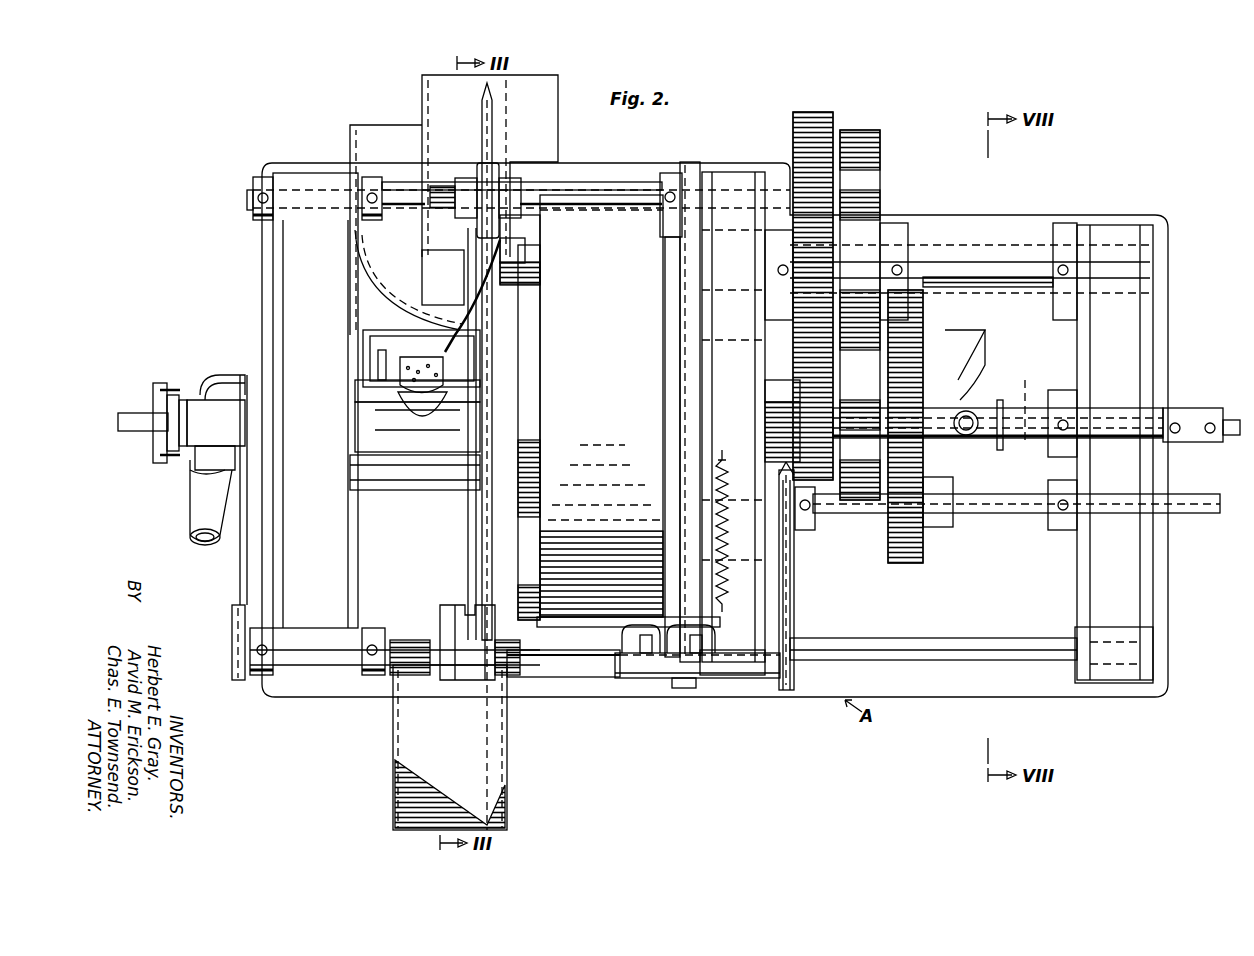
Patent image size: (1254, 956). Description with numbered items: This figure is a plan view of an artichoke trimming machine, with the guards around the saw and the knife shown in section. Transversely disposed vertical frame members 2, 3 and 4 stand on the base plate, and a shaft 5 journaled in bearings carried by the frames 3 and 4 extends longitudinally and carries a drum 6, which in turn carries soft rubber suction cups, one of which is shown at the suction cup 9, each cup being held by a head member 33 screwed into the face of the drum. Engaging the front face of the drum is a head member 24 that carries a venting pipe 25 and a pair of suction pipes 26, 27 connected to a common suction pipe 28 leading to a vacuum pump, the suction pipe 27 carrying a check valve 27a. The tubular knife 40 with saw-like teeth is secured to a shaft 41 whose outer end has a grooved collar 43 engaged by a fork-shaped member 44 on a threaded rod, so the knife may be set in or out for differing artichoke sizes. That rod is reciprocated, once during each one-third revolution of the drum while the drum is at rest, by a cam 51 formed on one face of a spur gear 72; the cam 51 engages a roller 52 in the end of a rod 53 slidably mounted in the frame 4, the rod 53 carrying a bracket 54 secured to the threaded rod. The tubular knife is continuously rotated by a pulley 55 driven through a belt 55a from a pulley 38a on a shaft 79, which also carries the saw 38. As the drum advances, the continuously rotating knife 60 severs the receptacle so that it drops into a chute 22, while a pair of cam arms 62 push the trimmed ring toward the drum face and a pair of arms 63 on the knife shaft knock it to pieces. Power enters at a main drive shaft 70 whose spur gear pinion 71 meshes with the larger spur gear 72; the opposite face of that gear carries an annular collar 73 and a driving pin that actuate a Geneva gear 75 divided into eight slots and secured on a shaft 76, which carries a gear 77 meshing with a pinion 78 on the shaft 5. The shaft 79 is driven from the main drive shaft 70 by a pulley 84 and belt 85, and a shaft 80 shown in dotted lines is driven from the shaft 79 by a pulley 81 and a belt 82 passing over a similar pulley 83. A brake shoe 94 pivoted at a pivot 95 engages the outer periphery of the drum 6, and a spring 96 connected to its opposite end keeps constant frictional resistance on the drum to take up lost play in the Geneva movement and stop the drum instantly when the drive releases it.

The frame member 2 is at (316, 424).
The frame member 3 is at (746, 423).
The frame member 4 is at (1100, 453).
The shaft 5 is at (945, 412).
The drum 6 is at (601, 406).
The suction cup 9 is at (505, 268).
The chute 22 is at (393, 125).
The head member 24 is at (532, 341).
The venting pipe 25 is at (480, 330).
The suction pipe 26 is at (432, 485).
The suction pipe 27 is at (385, 362).
The check valve 27a is at (440, 357).
The common suction pipe 28 is at (193, 515).
The head member 33 is at (525, 236).
The saw 38 is at (470, 578).
The pulley 38a is at (240, 622).
The tubular knife 40 is at (405, 460).
The shaft 41 is at (140, 413).
The grooved collar 43 is at (155, 440).
The fork-shaped member 44 is at (214, 392).
The cam 51 is at (985, 343).
The roller 52 is at (955, 440).
The rod 53 is at (1026, 370).
The bracket 54 is at (1210, 410).
The pulley 55 is at (252, 378).
The belt 55a is at (241, 564).
The knife 60 is at (482, 118).
The cam arms 62 is at (478, 318).
The arms 63 is at (497, 118).
The main drive shaft 70 is at (984, 496).
The spur gear pinion 71 is at (890, 560).
The spur gear 72 is at (898, 565).
The annular collar 73 is at (858, 500).
The Geneva gear 75 is at (880, 178).
The shaft 76 is at (982, 250).
The gear 77 is at (835, 120).
The pinion 78 is at (790, 392).
The shaft 79 is at (950, 638).
The shaft 80 is at (612, 190).
The pulley 81 is at (685, 690).
The belt 82 is at (685, 305).
The pulley 83 is at (690, 165).
The pulley 84 is at (795, 562).
The belt 85 is at (795, 602).
The brake shoe 94 is at (648, 690).
The pivot 95 is at (620, 680).
The spring 96 is at (728, 553).